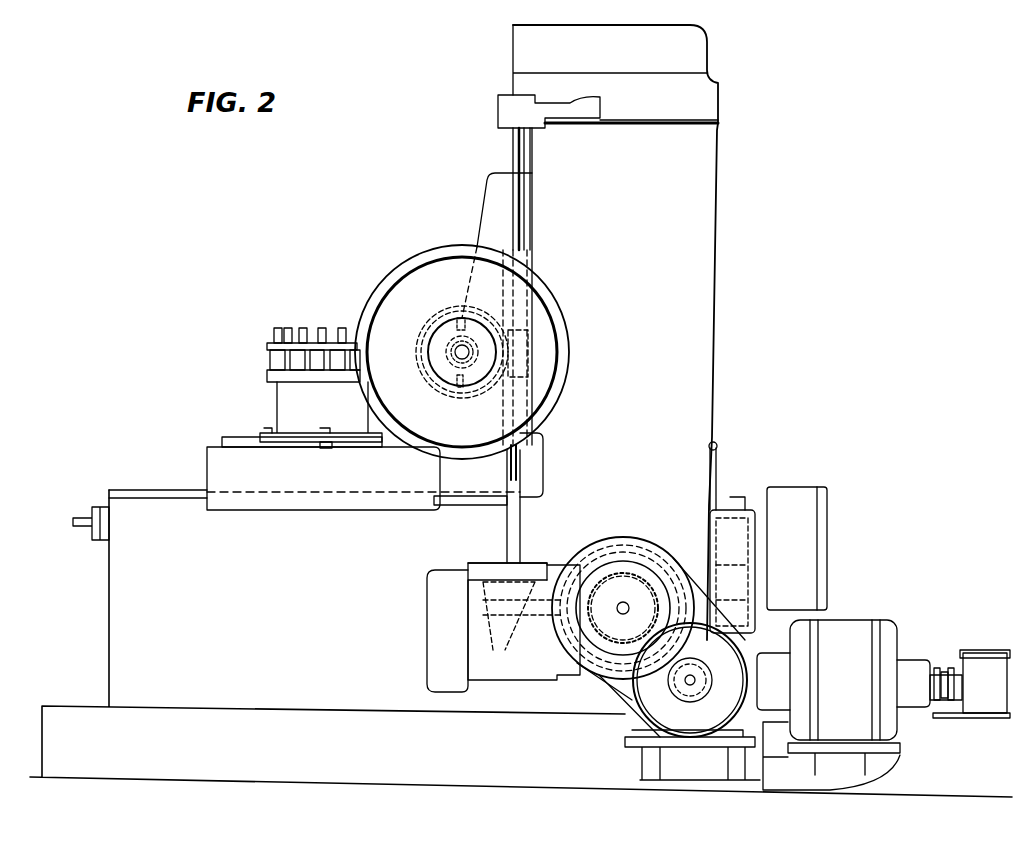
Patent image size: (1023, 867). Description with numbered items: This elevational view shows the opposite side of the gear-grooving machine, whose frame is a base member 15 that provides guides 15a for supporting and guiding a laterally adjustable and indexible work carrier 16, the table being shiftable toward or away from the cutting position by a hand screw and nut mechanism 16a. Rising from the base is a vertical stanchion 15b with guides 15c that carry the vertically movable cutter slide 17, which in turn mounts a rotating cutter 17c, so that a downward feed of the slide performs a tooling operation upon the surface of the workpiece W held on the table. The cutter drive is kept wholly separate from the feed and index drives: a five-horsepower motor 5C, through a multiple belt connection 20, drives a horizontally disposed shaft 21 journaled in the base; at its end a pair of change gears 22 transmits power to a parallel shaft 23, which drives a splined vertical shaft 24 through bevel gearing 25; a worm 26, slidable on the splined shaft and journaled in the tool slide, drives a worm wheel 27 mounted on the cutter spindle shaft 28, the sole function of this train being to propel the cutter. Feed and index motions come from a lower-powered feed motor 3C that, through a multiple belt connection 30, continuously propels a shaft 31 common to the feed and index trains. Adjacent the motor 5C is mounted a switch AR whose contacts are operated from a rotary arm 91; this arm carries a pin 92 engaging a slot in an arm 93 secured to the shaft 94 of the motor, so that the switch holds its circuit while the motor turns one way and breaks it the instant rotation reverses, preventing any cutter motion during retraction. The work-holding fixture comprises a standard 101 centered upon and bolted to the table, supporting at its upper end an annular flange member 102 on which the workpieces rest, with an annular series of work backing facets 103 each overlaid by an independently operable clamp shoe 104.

The base member 15 is at (121, 608).
The guides 15a is at (130, 490).
The vertical stanchion 15b is at (707, 178).
The guides 15c is at (507, 148).
The work carrier 16 is at (207, 456).
The hand screw and nut mechanism 16a is at (82, 518).
The cutter slide 17 is at (488, 195).
The rotating cutter 17c is at (446, 372).
The multiple belt connection 20 is at (740, 632).
The horizontally disposed shaft 21 is at (687, 560).
The change gears 22 is at (607, 557).
The parallel shaft 23 is at (543, 612).
The splined vertical shaft 24 is at (520, 530).
The bevel gearing 25 is at (510, 612).
The worm 26 is at (528, 352).
The worm wheel 27 is at (442, 323).
The cutter spindle shaft 28 is at (452, 360).
The multiple belt connection 30 is at (615, 690).
The shaft 31 is at (625, 600).
The feed motor 3C is at (650, 722).
The motor 5C is at (855, 625).
The rotary arm 91 is at (946, 672).
The pin 92 is at (952, 668).
The arm 93 is at (940, 668).
The shaft 94 is at (940, 700).
The standard 101 is at (277, 407).
The annular flange member 102 is at (267, 373).
The work backing facets 103 is at (318, 373).
The clamp shoe 104 is at (267, 345).
The workpiece W is at (267, 357).
The switch AR is at (985, 653).